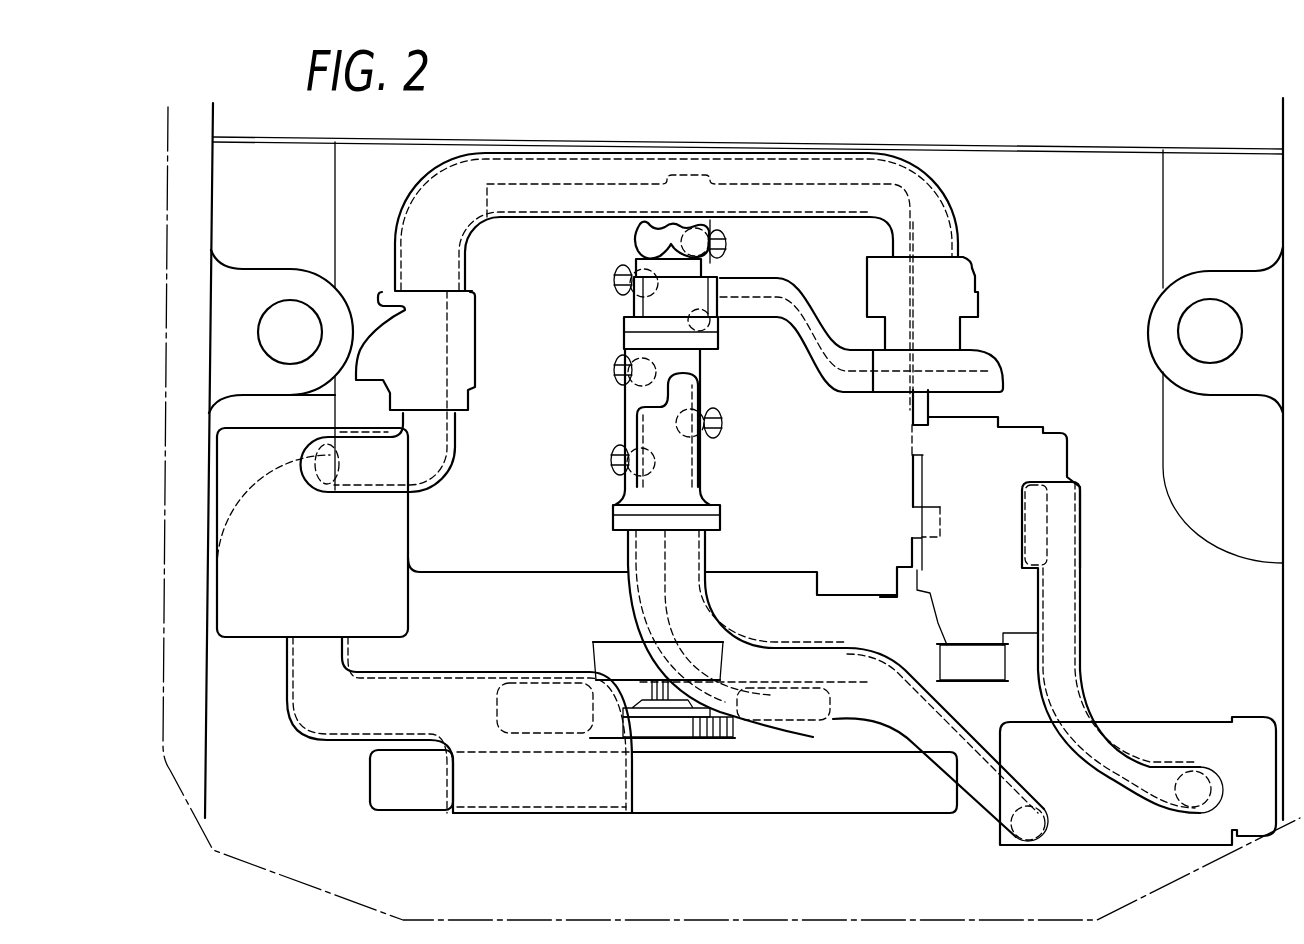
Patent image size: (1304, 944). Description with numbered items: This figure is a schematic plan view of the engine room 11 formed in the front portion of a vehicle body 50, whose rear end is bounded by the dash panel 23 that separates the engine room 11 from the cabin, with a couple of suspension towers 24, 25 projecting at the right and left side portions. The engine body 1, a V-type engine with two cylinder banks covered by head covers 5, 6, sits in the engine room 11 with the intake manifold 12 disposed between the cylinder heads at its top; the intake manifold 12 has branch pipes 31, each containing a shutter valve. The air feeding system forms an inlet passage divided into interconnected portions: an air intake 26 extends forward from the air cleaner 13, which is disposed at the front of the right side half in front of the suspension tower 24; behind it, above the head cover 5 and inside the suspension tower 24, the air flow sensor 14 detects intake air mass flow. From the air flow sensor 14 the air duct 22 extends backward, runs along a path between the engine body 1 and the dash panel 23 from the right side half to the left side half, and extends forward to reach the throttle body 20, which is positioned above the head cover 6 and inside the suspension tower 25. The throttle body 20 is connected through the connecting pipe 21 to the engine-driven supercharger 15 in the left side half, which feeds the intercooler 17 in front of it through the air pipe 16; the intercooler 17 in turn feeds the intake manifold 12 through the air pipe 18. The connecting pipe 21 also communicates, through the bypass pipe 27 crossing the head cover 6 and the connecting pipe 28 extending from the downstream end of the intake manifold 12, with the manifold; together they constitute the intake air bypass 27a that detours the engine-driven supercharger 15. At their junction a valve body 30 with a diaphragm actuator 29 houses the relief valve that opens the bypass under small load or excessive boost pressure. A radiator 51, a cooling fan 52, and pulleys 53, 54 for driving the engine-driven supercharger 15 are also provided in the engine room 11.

The engine body 1 is at (460, 586).
The head cover 5 is at (510, 557).
The head cover 6 is at (807, 563).
The engine room 11 is at (1138, 539).
The intake manifold 12 is at (712, 492).
The air cleaner 13 is at (227, 642).
The air flow sensor 14 is at (373, 317).
The engine-driven supercharger 15 is at (1057, 427).
The air pipe 16 is at (1080, 640).
The intercooler 17 is at (1190, 720).
The air pipe 18 is at (1000, 827).
The throttle body 20 is at (977, 270).
The connecting pipe 21 is at (1003, 370).
The air duct 22 is at (865, 160).
The dash panel 23 is at (1058, 152).
The suspension tower 24 is at (247, 267).
The suspension tower 25 is at (1197, 272).
The air intake 26 is at (510, 817).
The bypass pipe 27 is at (790, 300).
The intake air bypass 27a is at (815, 283).
The connecting pipe 28 is at (663, 230).
The diaphragm actuator 29 is at (630, 303).
The valve body 30 is at (622, 250).
The branch pipes 31 is at (611, 362).
The vehicle body 50 is at (163, 490).
The radiator 51 is at (673, 813).
The cooling fan 52 is at (755, 750).
The pulley 53 is at (593, 642).
The pulley 54 is at (937, 643).